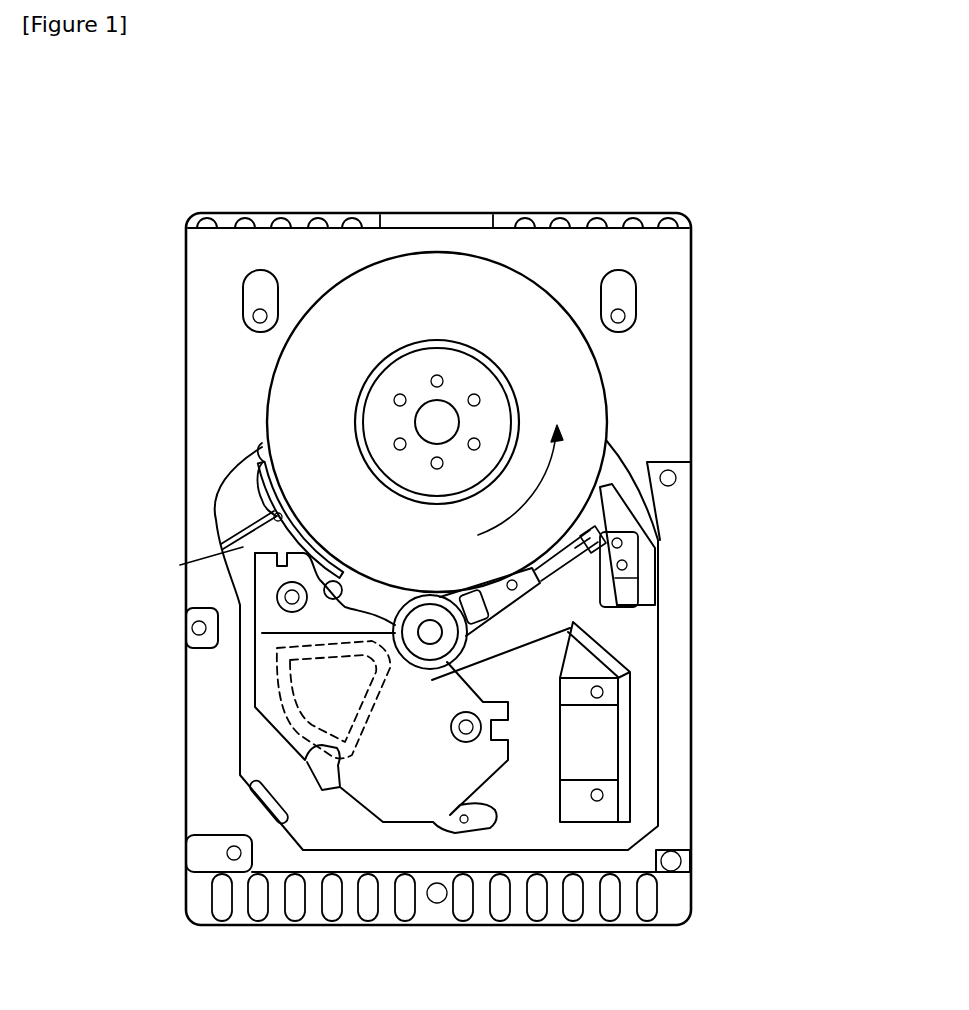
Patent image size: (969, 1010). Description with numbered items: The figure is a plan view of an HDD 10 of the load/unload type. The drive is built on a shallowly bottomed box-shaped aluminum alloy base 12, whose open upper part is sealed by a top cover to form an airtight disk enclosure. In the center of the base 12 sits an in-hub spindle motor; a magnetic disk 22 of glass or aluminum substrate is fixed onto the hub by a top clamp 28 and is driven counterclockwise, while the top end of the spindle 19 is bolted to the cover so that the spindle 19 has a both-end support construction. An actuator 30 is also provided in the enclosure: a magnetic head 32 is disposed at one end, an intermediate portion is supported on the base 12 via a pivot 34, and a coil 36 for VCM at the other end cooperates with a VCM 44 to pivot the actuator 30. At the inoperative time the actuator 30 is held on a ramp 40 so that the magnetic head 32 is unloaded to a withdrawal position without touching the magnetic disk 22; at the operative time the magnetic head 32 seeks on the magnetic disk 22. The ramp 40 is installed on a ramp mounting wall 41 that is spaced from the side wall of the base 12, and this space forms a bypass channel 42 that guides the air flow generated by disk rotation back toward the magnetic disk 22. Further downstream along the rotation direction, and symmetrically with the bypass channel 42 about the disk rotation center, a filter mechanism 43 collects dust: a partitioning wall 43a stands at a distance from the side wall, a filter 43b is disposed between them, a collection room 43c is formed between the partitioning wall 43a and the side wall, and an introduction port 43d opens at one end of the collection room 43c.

The HDD 10 is at (602, 196).
The base 12 is at (692, 447).
The spindle 19 is at (428, 420).
The magnetic disk 22 is at (288, 362).
The top clamp 28 is at (488, 432).
The actuator 30 is at (476, 633).
The magnetic head 32 is at (612, 608).
The pivot 34 is at (255, 660).
The coil for VCM 36 is at (275, 681).
The ramp 40 is at (583, 541).
The ramp mounting wall 41 is at (640, 556).
The bypass channel 42 is at (658, 520).
The filter mechanism 43 is at (201, 528).
The partitioning wall 43a is at (262, 488).
The filter 43b is at (242, 547).
The collection room 43c is at (243, 517).
The introduction port 43d is at (247, 468).
The VCM 44 is at (320, 735).